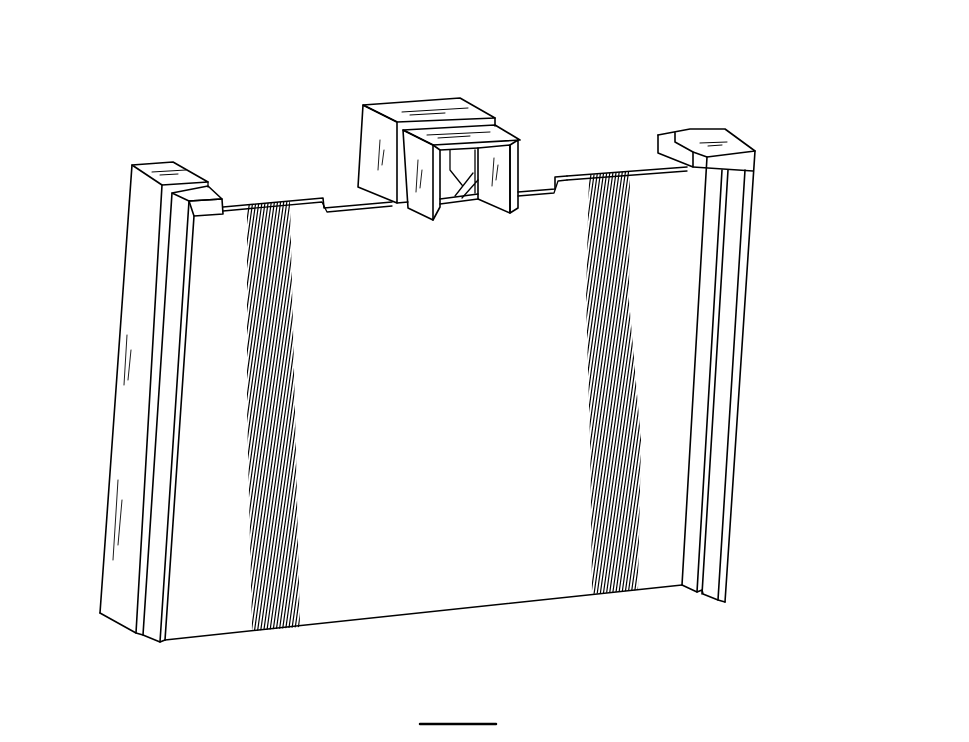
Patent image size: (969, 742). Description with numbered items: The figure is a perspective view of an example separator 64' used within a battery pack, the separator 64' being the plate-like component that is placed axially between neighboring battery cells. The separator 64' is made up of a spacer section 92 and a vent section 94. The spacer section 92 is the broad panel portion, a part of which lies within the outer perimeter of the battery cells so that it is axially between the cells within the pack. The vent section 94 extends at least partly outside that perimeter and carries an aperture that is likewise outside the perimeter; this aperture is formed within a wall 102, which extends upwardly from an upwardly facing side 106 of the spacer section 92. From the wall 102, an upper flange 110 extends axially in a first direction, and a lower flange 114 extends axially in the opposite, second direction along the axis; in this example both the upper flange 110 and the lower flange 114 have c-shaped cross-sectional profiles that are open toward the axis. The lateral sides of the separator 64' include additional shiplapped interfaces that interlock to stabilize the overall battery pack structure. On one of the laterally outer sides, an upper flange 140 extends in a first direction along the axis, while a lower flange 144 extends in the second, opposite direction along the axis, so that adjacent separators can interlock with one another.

The separator 64' is at (467, 389).
The spacer section 92 is at (660, 514).
The vent section 94 is at (436, 105).
The wall 102 is at (480, 172).
The upwardly facing side 106 is at (546, 186).
The upper flange 110 is at (372, 140).
The lower flange 114 is at (417, 190).
The upper flange 140 is at (158, 173).
The lower flange 144 is at (207, 211).